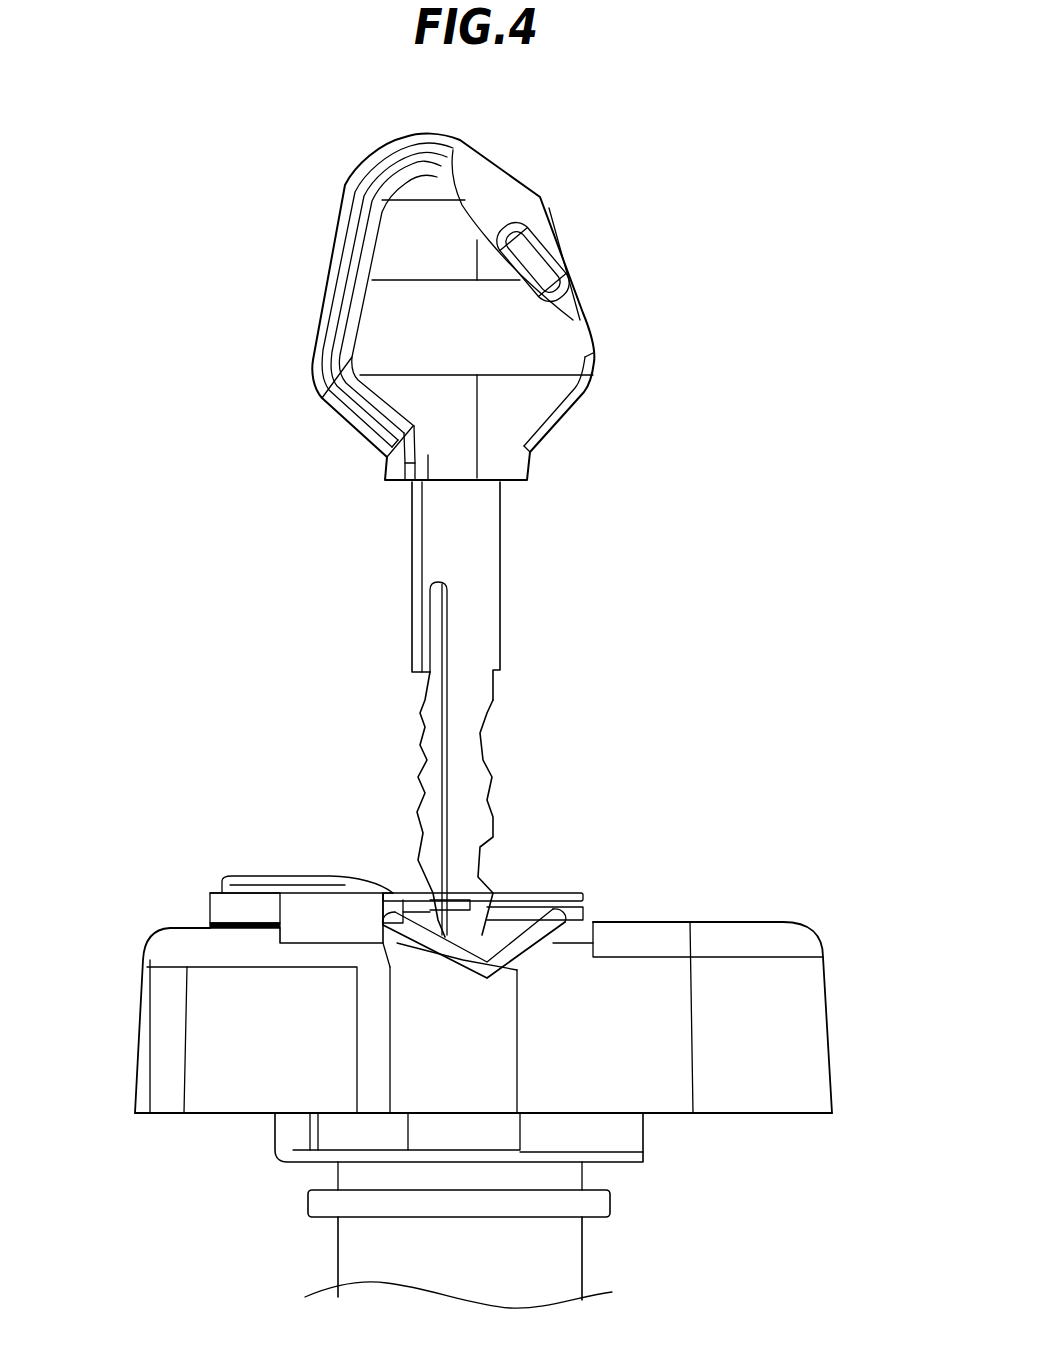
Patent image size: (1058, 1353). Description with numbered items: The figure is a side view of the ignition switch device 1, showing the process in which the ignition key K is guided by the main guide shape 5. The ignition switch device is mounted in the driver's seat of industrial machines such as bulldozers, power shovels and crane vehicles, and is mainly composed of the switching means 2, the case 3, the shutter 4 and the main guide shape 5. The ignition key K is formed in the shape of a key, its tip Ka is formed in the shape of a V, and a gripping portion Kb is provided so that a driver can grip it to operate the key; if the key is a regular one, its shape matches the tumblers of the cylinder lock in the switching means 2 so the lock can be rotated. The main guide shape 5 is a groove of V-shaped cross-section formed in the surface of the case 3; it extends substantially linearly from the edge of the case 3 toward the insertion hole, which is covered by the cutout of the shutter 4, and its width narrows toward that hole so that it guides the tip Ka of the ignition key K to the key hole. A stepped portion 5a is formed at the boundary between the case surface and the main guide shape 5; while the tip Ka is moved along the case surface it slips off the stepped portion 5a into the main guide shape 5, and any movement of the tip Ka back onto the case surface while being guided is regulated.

The lock device 1 is at (120, 377).
The ignition key K is at (607, 545).
The tip Ka is at (430, 887).
The gripping portion Kb is at (580, 291).
The switching means 2 is at (582, 1240).
The case 3 is at (830, 1033).
The shutter 4 is at (253, 877).
The main guide shape 5 is at (503, 893).
The stepped portion 5a is at (537, 897).